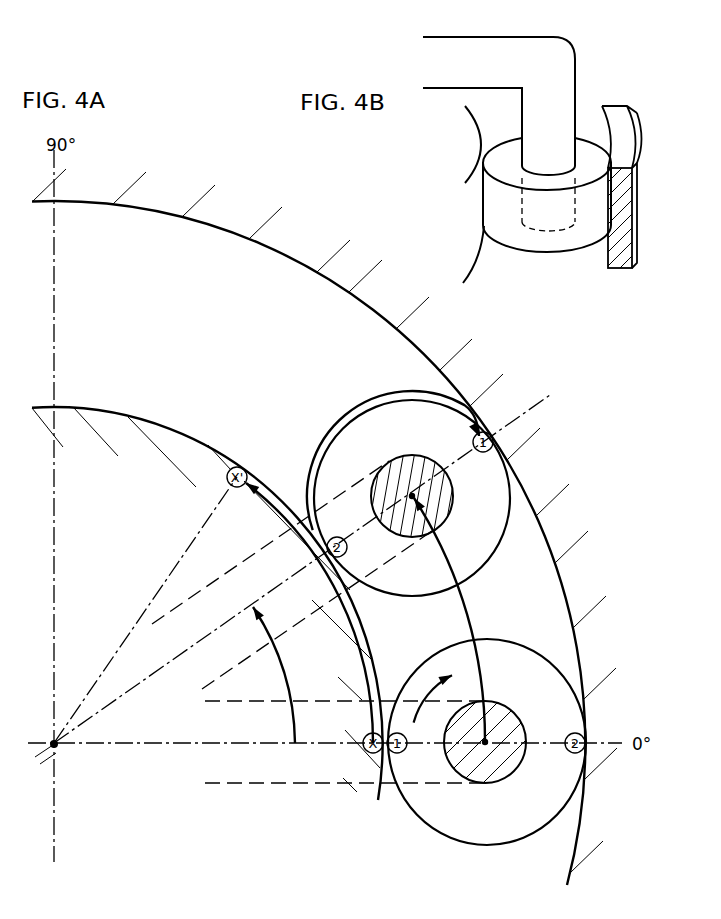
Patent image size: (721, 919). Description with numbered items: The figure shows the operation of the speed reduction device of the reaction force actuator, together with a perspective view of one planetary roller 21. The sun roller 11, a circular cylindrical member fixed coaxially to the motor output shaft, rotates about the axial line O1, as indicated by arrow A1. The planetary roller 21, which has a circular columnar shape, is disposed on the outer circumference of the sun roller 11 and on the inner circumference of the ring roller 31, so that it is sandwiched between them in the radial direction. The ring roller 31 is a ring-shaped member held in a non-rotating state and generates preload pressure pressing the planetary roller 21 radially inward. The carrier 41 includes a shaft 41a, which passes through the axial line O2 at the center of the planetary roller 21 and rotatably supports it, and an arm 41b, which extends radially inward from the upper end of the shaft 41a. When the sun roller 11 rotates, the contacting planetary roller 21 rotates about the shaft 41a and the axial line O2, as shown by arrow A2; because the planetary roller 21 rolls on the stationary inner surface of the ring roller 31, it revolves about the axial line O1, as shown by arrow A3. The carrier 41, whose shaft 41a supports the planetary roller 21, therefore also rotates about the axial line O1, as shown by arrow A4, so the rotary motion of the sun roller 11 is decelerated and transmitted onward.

In FIG. 4A, the sun roller 11 is at (177, 447).
In FIG. 4B, the sun roller 11 is at (467, 257).
In FIG. 4A, the planetary roller 21 is at (488, 528).
In FIG. 4B, the planetary roller 21 is at (548, 243).
In FIG. 4A, the ring roller 31 is at (316, 275).
In FIG. 4B, the ring roller 31 is at (617, 253).
In FIG. 4B, the carrier 41 is at (528, 119).
In FIG. 4A, the shaft 41a is at (405, 458).
In FIG. 4B, the shaft 41a is at (562, 100).
In FIG. 4A, the arm 41b is at (212, 581).
In FIG. 4B, the arm 41b is at (490, 46).
In FIG. 4A, the axial line O1 is at (60, 748).
In FIG. 4A, the axial line O2 is at (412, 492).
In FIG. 4A, the arrow A1 is at (330, 587).
In FIG. 4A, the arrow A2 is at (433, 685).
In FIG. 4A, the arrow A3 is at (480, 621).
In FIG. 4A, the arrow A4 is at (288, 681).